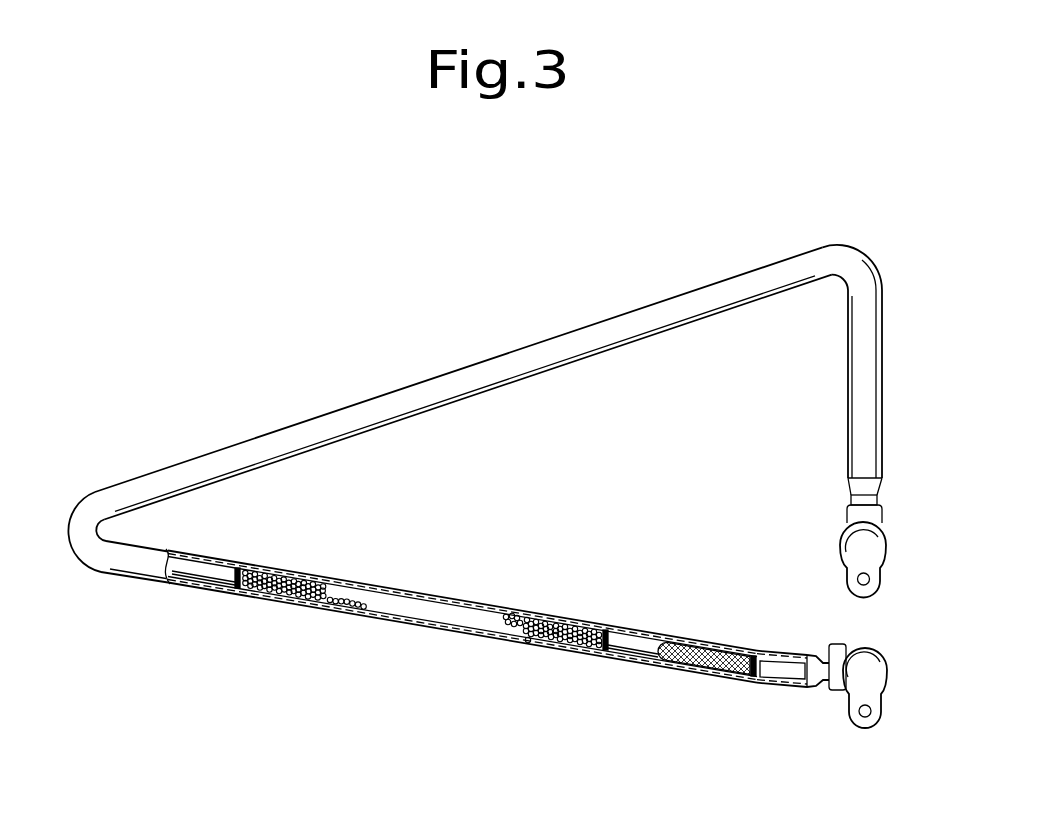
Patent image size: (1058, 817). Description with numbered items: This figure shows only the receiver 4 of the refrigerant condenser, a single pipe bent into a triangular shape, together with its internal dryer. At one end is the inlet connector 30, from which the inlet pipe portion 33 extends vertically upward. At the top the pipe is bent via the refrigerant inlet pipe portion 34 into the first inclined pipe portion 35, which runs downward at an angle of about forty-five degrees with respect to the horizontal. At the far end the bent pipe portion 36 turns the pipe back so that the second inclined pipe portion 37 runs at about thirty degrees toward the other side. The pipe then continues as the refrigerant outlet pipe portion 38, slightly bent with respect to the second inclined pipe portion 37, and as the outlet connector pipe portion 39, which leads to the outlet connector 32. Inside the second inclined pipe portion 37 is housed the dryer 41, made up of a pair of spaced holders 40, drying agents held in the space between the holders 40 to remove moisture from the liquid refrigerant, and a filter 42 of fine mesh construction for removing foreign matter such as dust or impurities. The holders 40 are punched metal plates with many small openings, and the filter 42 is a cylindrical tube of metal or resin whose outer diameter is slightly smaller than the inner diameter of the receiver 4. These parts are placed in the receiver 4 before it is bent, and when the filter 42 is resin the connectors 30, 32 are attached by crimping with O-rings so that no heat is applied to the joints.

The receiver 4 is at (675, 262).
The inlet connector 30 is at (878, 548).
The outlet connector 32 is at (884, 677).
The inlet pipe portion 33 is at (880, 412).
The refrigerant inlet pipe portion 34 is at (840, 262).
The first inclined pipe portion 35 is at (513, 360).
The bent pipe portion 36 is at (85, 533).
The second inclined pipe portion 37 is at (415, 592).
The refrigerant outlet pipe portion 38 is at (777, 677).
The outlet connector pipe portion 39 is at (818, 670).
The holders 40 is at (247, 572).
The dryer 41 is at (505, 632).
The filter 42 is at (697, 652).